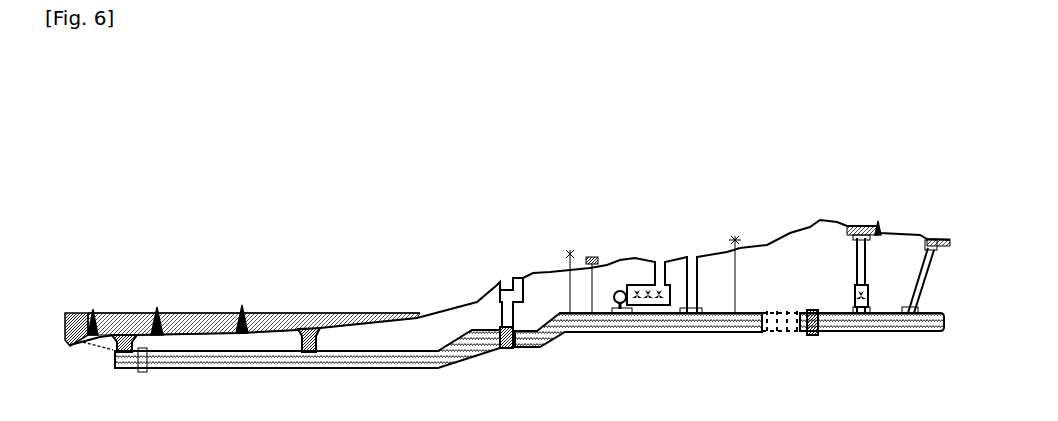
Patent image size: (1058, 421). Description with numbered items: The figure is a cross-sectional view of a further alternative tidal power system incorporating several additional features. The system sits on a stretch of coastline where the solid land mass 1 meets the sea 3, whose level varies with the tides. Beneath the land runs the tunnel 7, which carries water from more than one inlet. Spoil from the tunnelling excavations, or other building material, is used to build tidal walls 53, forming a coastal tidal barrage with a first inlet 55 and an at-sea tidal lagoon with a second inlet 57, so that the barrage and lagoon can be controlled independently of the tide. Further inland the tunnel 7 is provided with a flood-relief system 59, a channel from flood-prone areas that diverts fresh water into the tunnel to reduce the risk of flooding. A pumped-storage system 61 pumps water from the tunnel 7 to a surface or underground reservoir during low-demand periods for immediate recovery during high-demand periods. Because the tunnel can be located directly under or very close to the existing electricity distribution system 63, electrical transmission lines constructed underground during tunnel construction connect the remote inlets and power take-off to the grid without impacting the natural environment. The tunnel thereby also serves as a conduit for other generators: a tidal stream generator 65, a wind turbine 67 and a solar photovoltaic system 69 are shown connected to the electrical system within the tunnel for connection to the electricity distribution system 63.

The solid land mass 1 is at (798, 245).
The sea 3 is at (155, 315).
The tunnel 7 is at (480, 348).
The tidal wall 53 is at (240, 317).
The first inlet 55 is at (305, 317).
The second inlet 57 is at (123, 317).
The flood-relief system 59 is at (930, 238).
The pumped-storage system 61 is at (856, 222).
The electricity distribution system 63 is at (735, 240).
The tidal stream generator 65 is at (78, 315).
The wind turbine 67 is at (570, 257).
The solar photovoltaic system 69 is at (592, 257).